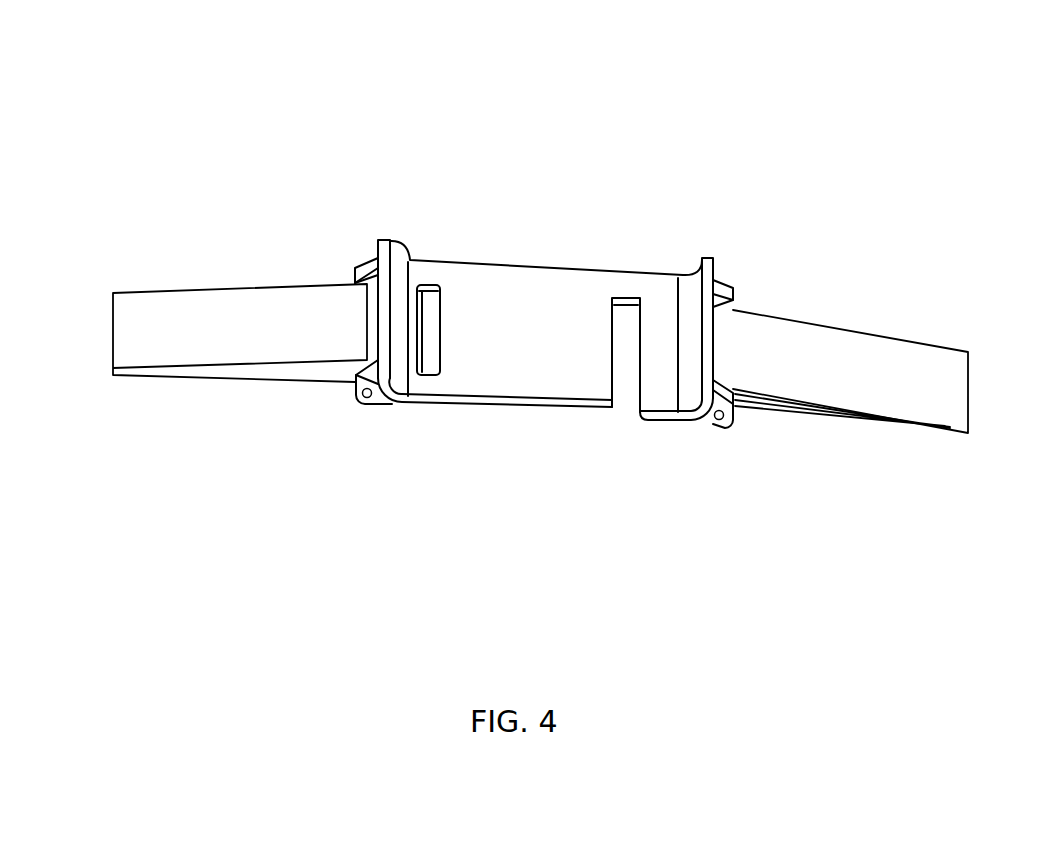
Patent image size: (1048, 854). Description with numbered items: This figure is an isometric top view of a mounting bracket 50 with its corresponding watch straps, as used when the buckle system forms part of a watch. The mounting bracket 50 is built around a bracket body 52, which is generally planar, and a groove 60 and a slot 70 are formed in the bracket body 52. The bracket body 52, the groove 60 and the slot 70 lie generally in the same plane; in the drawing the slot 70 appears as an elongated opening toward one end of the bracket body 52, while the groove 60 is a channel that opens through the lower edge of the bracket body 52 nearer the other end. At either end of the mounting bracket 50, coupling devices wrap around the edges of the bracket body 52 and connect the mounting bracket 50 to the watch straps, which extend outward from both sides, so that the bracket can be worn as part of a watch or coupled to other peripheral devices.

The mounting bracket 50 is at (572, 70).
The bracket body 52 is at (522, 277).
The groove 60 is at (621, 385).
The slot 70 is at (427, 355).